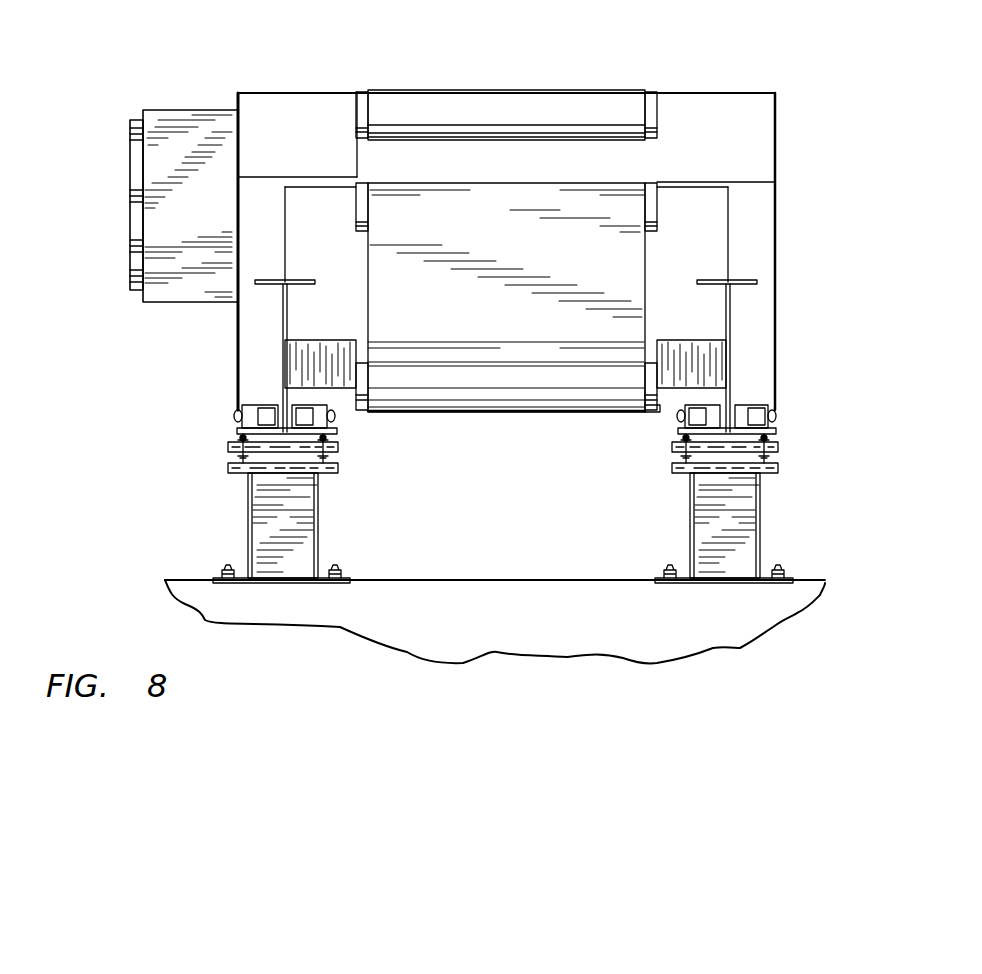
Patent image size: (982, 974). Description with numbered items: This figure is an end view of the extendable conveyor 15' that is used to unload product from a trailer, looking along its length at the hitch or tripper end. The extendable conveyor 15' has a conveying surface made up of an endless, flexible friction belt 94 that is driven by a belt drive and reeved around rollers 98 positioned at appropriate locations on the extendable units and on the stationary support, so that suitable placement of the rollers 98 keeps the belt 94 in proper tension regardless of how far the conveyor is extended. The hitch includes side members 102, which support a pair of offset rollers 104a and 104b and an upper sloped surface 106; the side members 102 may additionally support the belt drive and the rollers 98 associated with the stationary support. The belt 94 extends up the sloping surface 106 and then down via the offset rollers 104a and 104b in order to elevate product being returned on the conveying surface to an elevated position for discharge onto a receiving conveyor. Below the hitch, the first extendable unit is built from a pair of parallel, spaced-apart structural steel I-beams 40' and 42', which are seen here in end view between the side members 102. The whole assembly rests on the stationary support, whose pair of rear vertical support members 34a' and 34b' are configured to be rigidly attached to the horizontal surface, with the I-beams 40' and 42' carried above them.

The extendable conveyor 15' is at (501, 235).
The side members 102 is at (236, 93).
The upper sloped surface 106 is at (306, 93).
The friction belt 94 is at (505, 90).
The offset roller 104a is at (633, 107).
The offset roller 104b is at (650, 202).
The I-beam 40' is at (248, 309).
The I-beam 42' is at (759, 309).
The rollers 98 is at (657, 406).
The rear vertical support member 34a' is at (305, 494).
The rear vertical support member 34b' is at (749, 494).